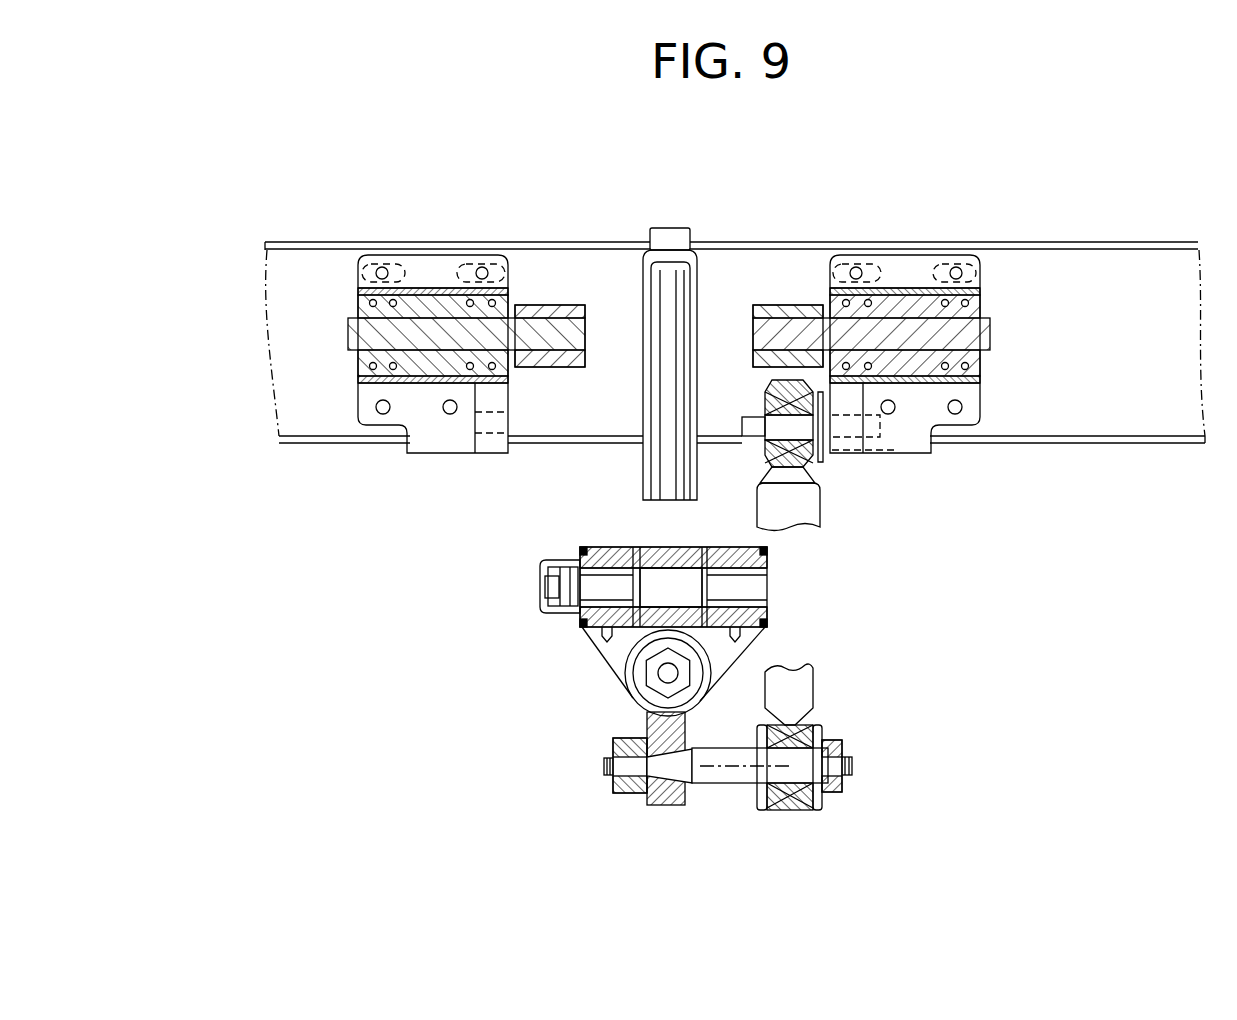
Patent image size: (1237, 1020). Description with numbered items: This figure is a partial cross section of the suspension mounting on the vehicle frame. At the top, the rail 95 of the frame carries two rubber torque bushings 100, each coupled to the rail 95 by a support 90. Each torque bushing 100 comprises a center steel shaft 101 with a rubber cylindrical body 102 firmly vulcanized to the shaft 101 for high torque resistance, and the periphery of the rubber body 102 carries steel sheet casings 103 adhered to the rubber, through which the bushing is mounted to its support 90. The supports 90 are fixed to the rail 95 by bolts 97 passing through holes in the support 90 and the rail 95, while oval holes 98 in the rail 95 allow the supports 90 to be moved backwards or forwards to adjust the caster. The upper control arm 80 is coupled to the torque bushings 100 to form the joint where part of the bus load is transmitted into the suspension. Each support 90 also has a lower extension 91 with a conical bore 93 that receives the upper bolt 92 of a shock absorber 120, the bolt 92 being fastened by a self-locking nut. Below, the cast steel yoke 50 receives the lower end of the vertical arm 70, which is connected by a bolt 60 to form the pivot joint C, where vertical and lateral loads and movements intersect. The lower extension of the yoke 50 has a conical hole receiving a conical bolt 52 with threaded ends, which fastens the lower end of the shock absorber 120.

The yoke 50 is at (625, 641).
The conical bolt 52 is at (733, 768).
The bolt 60 is at (738, 582).
The vertical arm 70 is at (655, 540).
The upper control arm 80 is at (572, 305).
The support 90 is at (434, 266).
The lower extension 91 is at (498, 456).
The upper bolt 92 is at (753, 433).
The conical bore 93 is at (896, 453).
The rail 95 is at (1170, 410).
The bolts 97 is at (382, 267).
The oval holes 98 is at (405, 264).
The torque bushing 100 is at (318, 336).
The center steel shaft 101 is at (350, 345).
The rubber cylindrical body 102 is at (355, 302).
The steel sheet casing 103 is at (355, 277).
The shock absorber 120 is at (820, 508).
The joint C is at (528, 595).